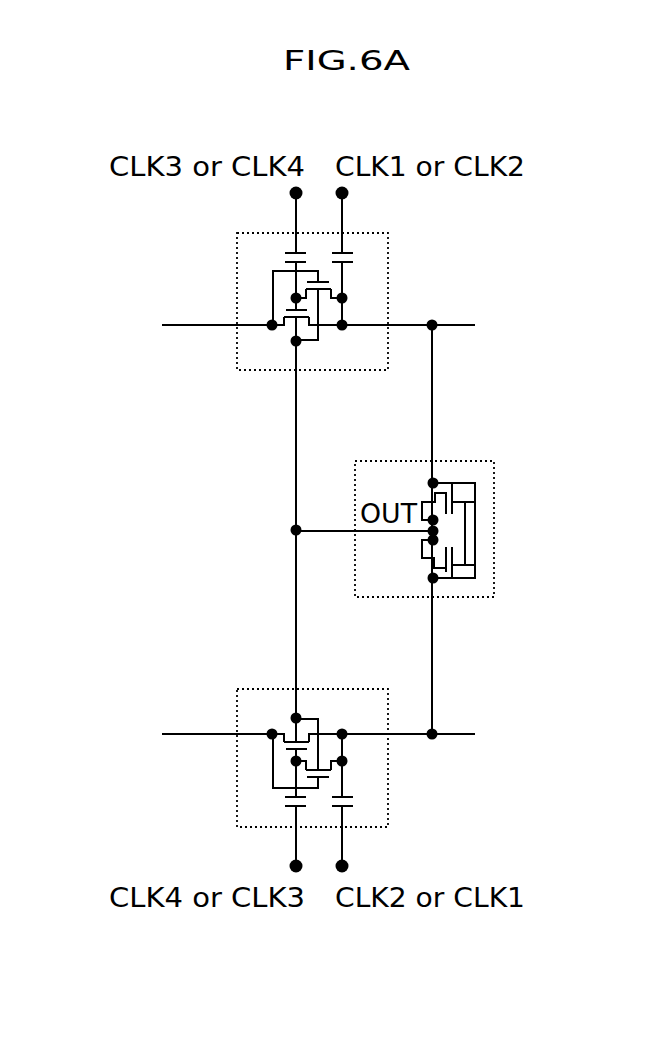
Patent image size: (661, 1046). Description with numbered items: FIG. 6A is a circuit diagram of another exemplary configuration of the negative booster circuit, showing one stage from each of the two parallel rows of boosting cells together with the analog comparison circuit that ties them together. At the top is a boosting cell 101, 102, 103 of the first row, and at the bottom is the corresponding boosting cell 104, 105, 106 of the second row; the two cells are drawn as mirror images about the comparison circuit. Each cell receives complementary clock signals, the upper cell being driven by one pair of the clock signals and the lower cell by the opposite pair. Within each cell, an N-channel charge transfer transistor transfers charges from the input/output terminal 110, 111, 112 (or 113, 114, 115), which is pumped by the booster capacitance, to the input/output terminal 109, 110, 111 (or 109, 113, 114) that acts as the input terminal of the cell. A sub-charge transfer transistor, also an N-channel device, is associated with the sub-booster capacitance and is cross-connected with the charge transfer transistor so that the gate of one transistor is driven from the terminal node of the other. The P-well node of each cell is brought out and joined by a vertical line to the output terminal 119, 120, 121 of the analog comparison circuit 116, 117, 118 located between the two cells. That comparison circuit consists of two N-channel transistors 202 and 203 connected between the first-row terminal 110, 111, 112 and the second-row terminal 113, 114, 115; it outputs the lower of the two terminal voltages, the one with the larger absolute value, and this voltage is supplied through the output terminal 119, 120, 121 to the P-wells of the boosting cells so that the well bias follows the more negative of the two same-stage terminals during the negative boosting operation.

The boosting cell 101 is at (367, 282).
The boosting cell 102 is at (367, 282).
The boosting cell 103 is at (367, 282).
The boosting cell 104 is at (371, 777).
The boosting cell 105 is at (371, 777).
The boosting cell 106 is at (371, 777).
The input/output terminal 109 is at (341, 357).
The input/output terminal 110 is at (341, 357).
The input/output terminal 111 is at (341, 357).
The input/output terminal 112 is at (178, 326).
The input/output terminal 113 is at (341, 659).
The input/output terminal 114 is at (341, 659).
The input/output terminal 115 is at (178, 733).
The analog comparison circuit 116 is at (518, 404).
The analog comparison circuit 117 is at (518, 404).
The analog comparison circuit 118 is at (470, 461).
The output terminal of analog comparison circuit 119 is at (265, 532).
The output terminal of analog comparison circuit 120 is at (265, 532).
The output terminal of analog comparison circuit 121 is at (291, 531).
The Nch transistor 202 is at (454, 500).
The Nch transistor 203 is at (455, 562).